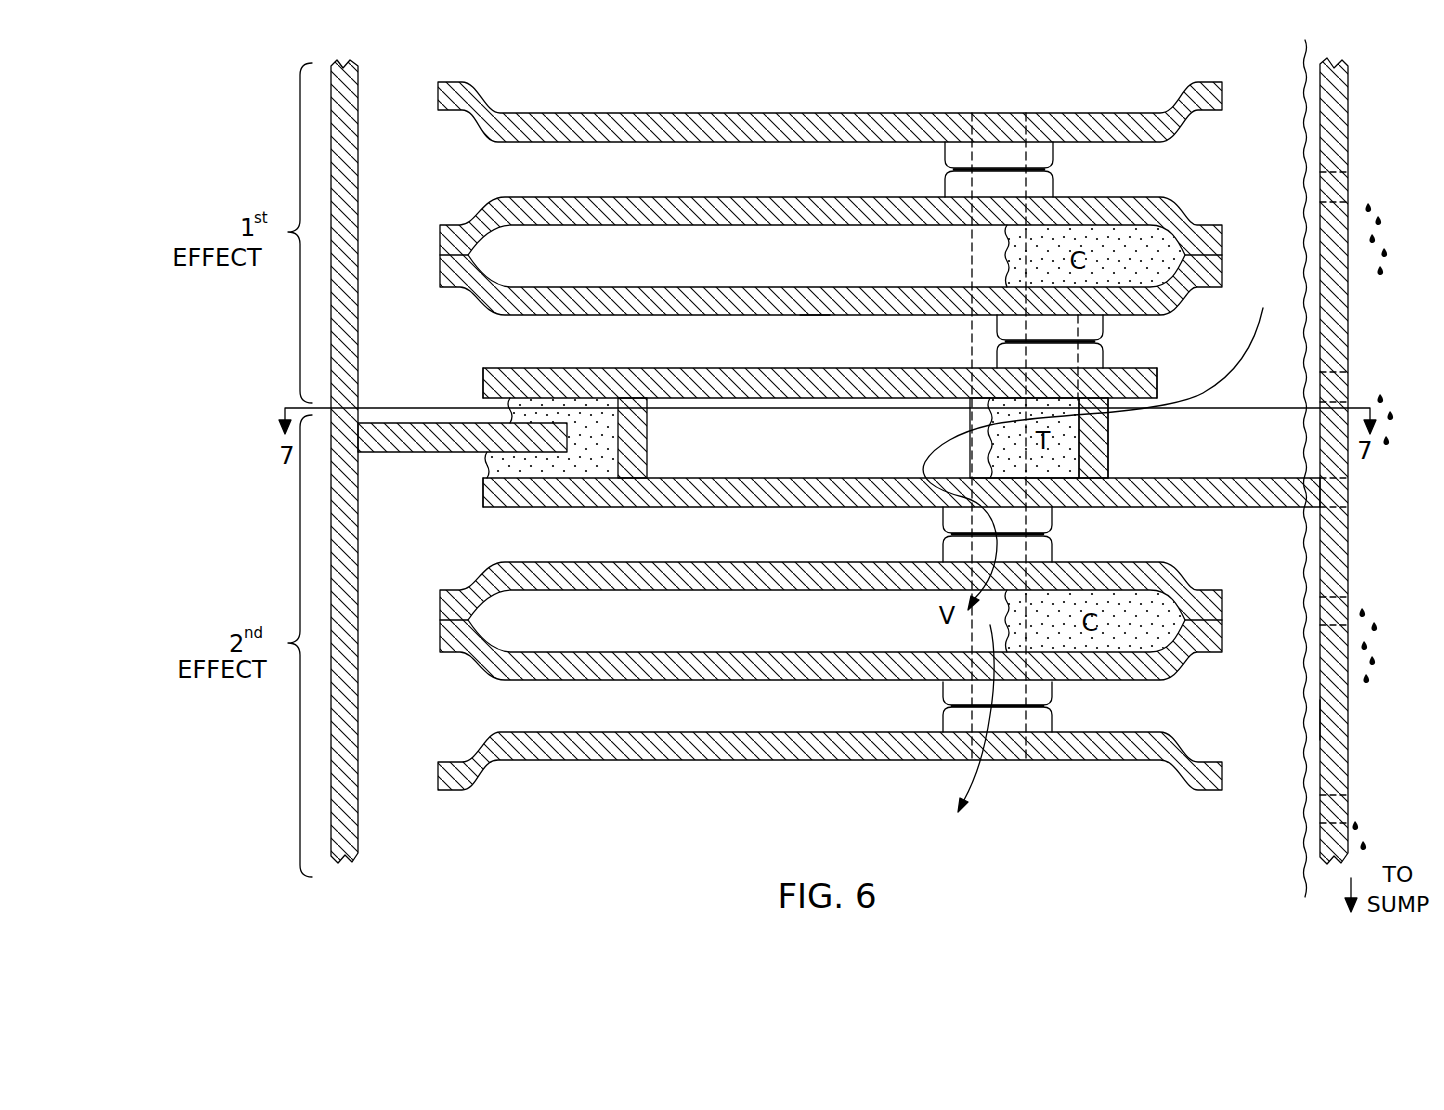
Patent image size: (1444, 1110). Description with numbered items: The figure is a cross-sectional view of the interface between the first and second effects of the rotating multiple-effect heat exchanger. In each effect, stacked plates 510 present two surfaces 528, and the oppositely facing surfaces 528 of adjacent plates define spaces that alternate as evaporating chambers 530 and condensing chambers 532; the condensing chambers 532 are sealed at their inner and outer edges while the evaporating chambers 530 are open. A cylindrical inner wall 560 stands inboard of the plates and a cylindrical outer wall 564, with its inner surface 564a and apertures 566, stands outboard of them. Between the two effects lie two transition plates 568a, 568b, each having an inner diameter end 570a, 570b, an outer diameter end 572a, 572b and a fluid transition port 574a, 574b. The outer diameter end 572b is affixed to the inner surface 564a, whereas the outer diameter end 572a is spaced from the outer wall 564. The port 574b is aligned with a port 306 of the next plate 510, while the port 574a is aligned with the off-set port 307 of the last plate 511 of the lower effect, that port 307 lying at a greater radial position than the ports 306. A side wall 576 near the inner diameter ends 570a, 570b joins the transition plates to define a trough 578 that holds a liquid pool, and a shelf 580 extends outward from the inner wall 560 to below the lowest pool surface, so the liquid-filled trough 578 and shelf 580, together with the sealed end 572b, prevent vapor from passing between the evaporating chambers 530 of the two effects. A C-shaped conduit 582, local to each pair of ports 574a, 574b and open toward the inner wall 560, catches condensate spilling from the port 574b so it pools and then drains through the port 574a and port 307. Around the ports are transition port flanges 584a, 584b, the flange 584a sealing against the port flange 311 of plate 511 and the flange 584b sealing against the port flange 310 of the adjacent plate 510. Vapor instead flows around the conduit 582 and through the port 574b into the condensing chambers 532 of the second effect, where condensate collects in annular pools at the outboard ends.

The port 306 is at (1030, 697).
The off-set port 307 is at (1023, 332).
The port flange 310 is at (947, 693).
The port flange 311 is at (997, 332).
The plate 510 is at (570, 113).
The heat exchange plate 511 is at (823, 316).
The surface 528 is at (530, 287).
The evaporating chamber 530 is at (712, 181).
The condensing chamber 532 is at (712, 271).
The inner wall 560 is at (358, 708).
The outer wall 564 is at (1320, 102).
The inner surface 564a is at (1320, 715).
The aperture 566 is at (1320, 810).
The transition plate 568a is at (678, 367).
The transition plate 568b is at (783, 508).
The inner diameter end 570a is at (478, 368).
The inner diameter end 570b is at (483, 492).
The outer diameter end 572a is at (1157, 383).
The outer diameter end 572b is at (1320, 492).
The fluid transition port 574a is at (983, 418).
The fluid transition port 574b is at (1107, 456).
The side wall 576 is at (648, 437).
The trough 578 is at (597, 470).
The shelf 580 is at (430, 423).
The C-shaped conduit 582 is at (1110, 424).
The transition port flange 584a is at (997, 355).
The transition port flange 584b is at (943, 526).